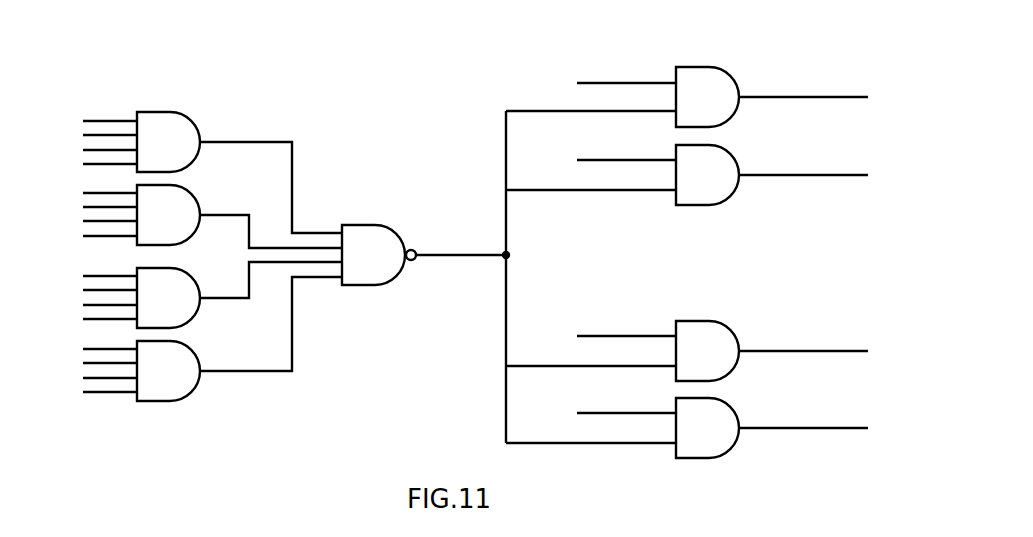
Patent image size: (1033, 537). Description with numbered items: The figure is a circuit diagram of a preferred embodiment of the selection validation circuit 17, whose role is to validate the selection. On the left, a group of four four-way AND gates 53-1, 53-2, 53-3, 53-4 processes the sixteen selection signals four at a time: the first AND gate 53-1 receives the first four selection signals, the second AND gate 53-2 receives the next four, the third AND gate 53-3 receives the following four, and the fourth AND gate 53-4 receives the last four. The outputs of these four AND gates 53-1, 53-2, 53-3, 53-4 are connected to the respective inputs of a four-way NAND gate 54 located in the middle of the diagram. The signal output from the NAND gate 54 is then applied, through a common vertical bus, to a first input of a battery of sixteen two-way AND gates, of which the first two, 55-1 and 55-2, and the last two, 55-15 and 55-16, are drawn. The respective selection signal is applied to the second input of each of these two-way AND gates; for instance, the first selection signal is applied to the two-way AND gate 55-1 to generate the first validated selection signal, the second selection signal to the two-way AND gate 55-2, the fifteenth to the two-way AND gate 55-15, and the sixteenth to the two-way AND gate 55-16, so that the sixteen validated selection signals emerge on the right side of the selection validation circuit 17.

The selection validation circuit 17 is at (853, 43).
The four-way AND gate 53-1 is at (190, 122).
The four-way AND gate 53-2 is at (190, 194).
The four-way AND gate 53-3 is at (192, 318).
The four-way AND gate 53-4 is at (192, 392).
The four-way NAND gate 54 is at (390, 228).
The two-way AND gate 55-1 is at (729, 76).
The two-way AND gate 55-2 is at (729, 155).
The two-way AND gate 55-15 is at (730, 370).
The two-way AND gate 55-16 is at (730, 445).